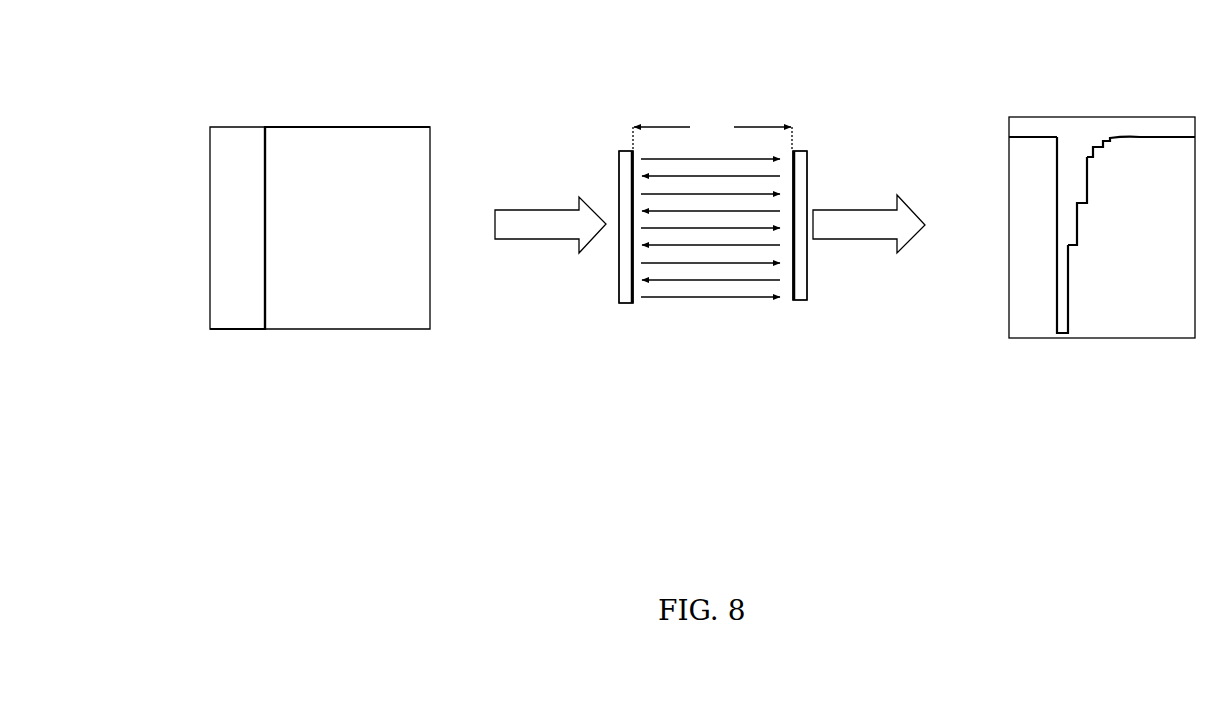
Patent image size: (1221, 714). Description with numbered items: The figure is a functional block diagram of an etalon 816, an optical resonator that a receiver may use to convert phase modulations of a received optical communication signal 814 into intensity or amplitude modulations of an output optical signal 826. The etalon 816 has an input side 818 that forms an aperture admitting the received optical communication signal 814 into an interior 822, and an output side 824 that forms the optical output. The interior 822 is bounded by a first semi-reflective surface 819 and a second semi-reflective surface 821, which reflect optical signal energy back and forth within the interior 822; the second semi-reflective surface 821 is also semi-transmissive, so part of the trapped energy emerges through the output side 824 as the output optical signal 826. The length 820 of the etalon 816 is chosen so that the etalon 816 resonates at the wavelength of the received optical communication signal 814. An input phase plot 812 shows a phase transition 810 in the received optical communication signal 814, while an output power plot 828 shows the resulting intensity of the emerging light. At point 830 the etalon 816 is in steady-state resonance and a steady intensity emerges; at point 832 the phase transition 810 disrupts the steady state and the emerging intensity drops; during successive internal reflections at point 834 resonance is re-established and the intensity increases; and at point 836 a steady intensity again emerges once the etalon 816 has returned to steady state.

The phase transition 810 is at (263, 120).
The input phase plot 812 is at (356, 88).
The received optical communication signal 814 is at (534, 209).
The etalon 816 is at (766, 57).
The input side 818 is at (616, 177).
The first semi-reflective surface 819 is at (632, 306).
The length 820 is at (712, 135).
The second semi-reflective surface 821 is at (790, 303).
The interior 822 is at (713, 309).
The output side 824 is at (809, 175).
The output optical signal 826 is at (846, 209).
The output power plot 828 is at (1088, 78).
The steady-state resonance point 830 is at (1026, 127).
The phase transition point 832 is at (1062, 152).
The successive reflections point 834 is at (1079, 228).
The returned steady-state point 836 is at (1158, 138).